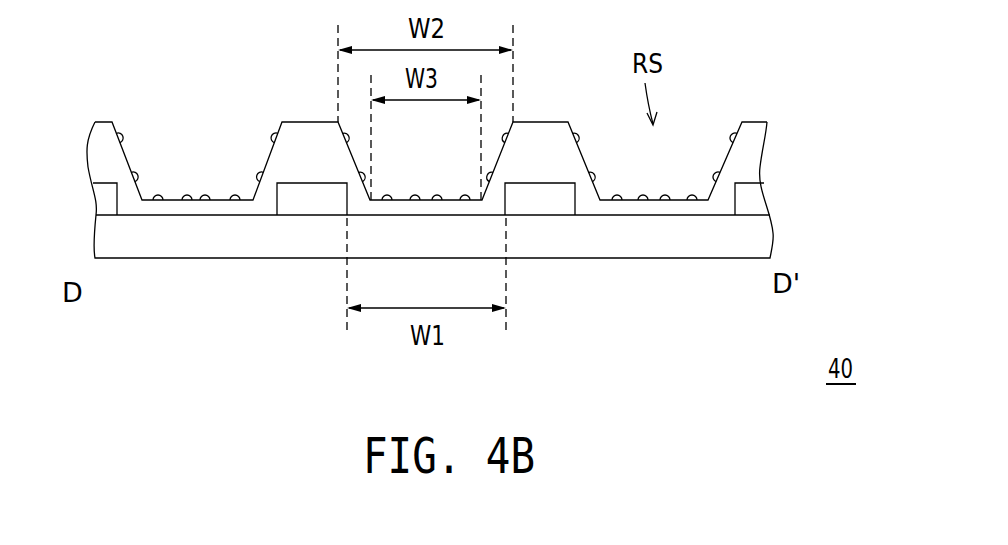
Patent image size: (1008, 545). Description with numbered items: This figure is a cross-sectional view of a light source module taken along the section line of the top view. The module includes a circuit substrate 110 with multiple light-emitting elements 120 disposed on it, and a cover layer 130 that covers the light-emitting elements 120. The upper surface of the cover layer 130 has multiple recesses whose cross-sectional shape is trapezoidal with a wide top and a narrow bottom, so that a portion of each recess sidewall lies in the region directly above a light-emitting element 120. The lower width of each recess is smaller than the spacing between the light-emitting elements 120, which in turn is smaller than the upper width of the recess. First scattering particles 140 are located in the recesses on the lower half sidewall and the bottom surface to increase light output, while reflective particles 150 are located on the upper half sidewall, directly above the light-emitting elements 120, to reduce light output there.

The circuit substrate 110 is at (755, 243).
The light-emitting elements 120 is at (752, 198).
The cover layer 130 is at (757, 167).
The first scattering particles 140 is at (255, 175).
The reflective particles 150 is at (271, 136).